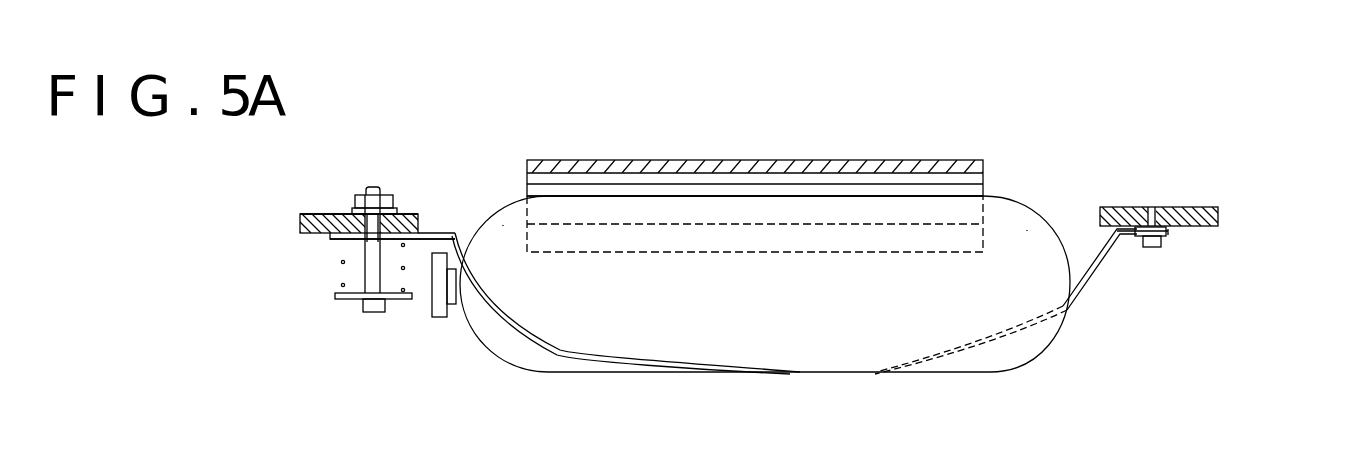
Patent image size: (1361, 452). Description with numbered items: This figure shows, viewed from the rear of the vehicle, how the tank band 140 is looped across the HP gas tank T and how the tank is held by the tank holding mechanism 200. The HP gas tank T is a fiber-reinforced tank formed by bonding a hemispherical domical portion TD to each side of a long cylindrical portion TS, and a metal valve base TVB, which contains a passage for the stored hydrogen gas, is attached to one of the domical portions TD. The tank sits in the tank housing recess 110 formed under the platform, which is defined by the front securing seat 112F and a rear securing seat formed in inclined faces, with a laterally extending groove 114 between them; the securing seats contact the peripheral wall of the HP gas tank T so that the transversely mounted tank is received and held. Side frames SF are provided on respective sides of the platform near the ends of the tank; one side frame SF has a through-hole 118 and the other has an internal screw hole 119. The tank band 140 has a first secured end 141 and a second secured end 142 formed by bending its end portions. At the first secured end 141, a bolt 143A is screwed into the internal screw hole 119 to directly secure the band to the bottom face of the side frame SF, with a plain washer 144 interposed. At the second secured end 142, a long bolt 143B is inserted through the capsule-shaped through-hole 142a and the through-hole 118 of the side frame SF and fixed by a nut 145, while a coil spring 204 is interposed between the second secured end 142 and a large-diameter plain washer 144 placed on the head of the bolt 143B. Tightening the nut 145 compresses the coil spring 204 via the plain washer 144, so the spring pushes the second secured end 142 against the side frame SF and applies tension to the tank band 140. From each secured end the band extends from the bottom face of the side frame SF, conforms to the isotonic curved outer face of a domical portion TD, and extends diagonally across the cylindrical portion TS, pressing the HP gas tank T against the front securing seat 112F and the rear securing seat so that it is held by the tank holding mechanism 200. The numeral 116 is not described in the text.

The tank holding mechanism 200 is at (275, 380).
The tank housing recess 110 is at (720, 174).
The groove 114 is at (753, 146).
The front securing seat 112F is at (820, 213).
The seat frame member 116 is at (900, 238).
The through-hole 118 is at (374, 187).
The internal screw hole 119 is at (1151, 208).
The tank band 140 is at (508, 335).
The first secured end 141 is at (1170, 231).
The second secured end 142 is at (328, 238).
The through-hole 142a is at (340, 213).
The bolt 143A is at (1157, 247).
The long bolt 143B is at (373, 312).
The plain washer 144 is at (353, 208).
The nut 145 is at (360, 195).
The coil spring 204 is at (340, 285).
The HP gas tank T is at (765, 321).
The cylindrical portion TS is at (804, 350).
The domical portion TD is at (503, 225).
The side frame SF is at (407, 214).
The valve base TVB is at (440, 317).